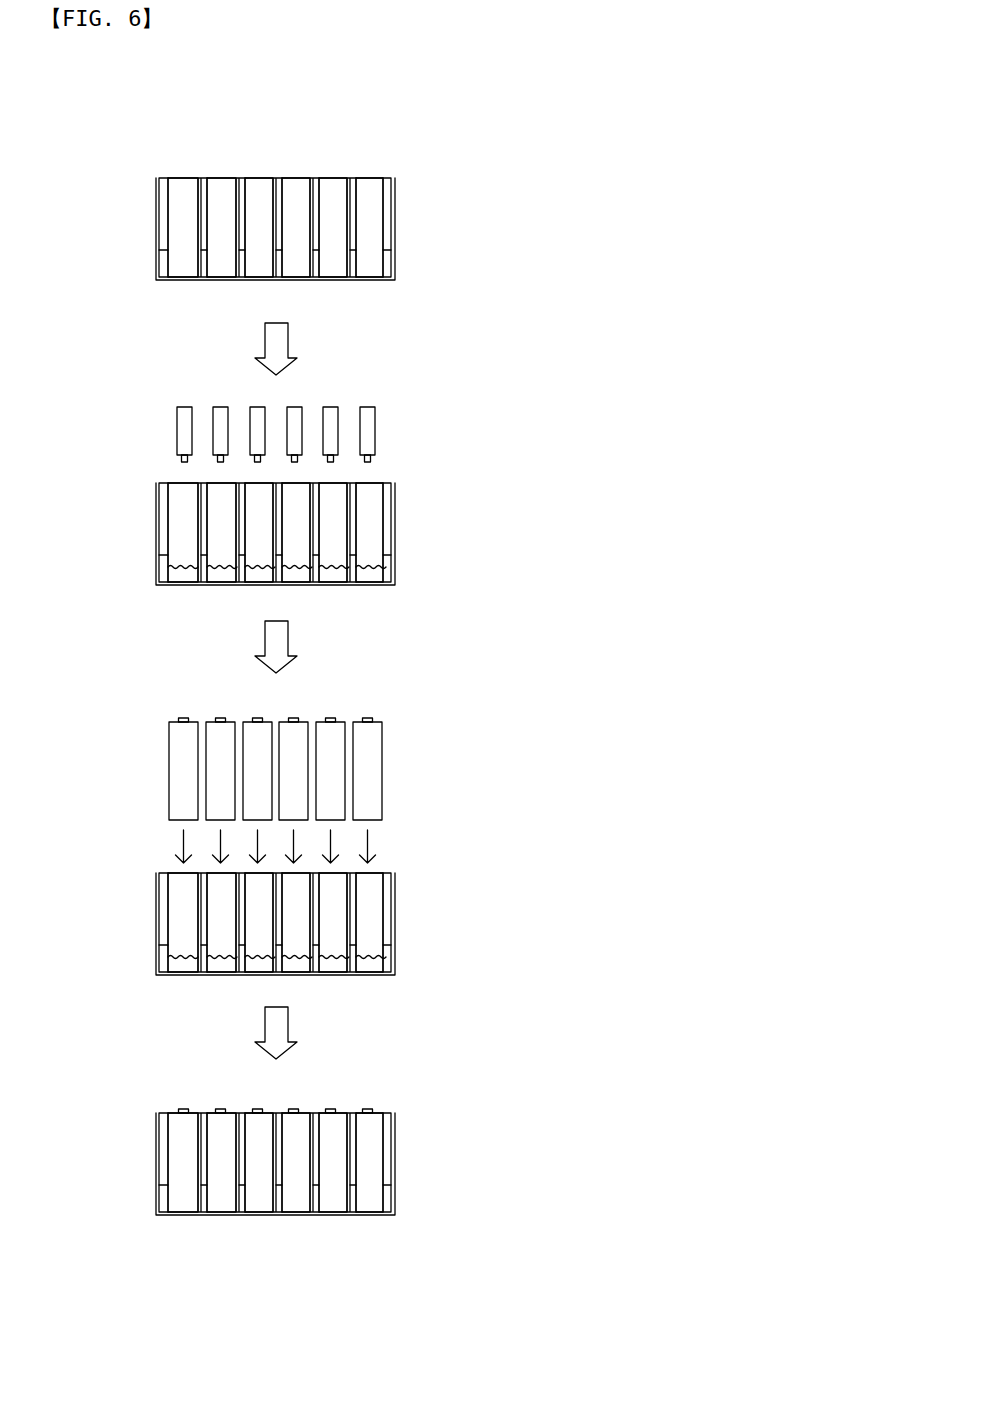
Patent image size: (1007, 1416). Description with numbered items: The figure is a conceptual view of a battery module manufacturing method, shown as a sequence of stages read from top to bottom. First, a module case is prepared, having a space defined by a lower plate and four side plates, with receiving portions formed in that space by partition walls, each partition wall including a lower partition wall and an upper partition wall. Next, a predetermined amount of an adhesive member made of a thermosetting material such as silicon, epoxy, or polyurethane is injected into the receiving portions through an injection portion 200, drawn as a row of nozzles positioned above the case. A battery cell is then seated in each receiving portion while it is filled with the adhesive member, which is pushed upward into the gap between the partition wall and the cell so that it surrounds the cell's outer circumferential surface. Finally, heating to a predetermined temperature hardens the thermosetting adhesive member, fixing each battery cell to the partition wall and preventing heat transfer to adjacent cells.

The injection portion 200 is at (177, 430).